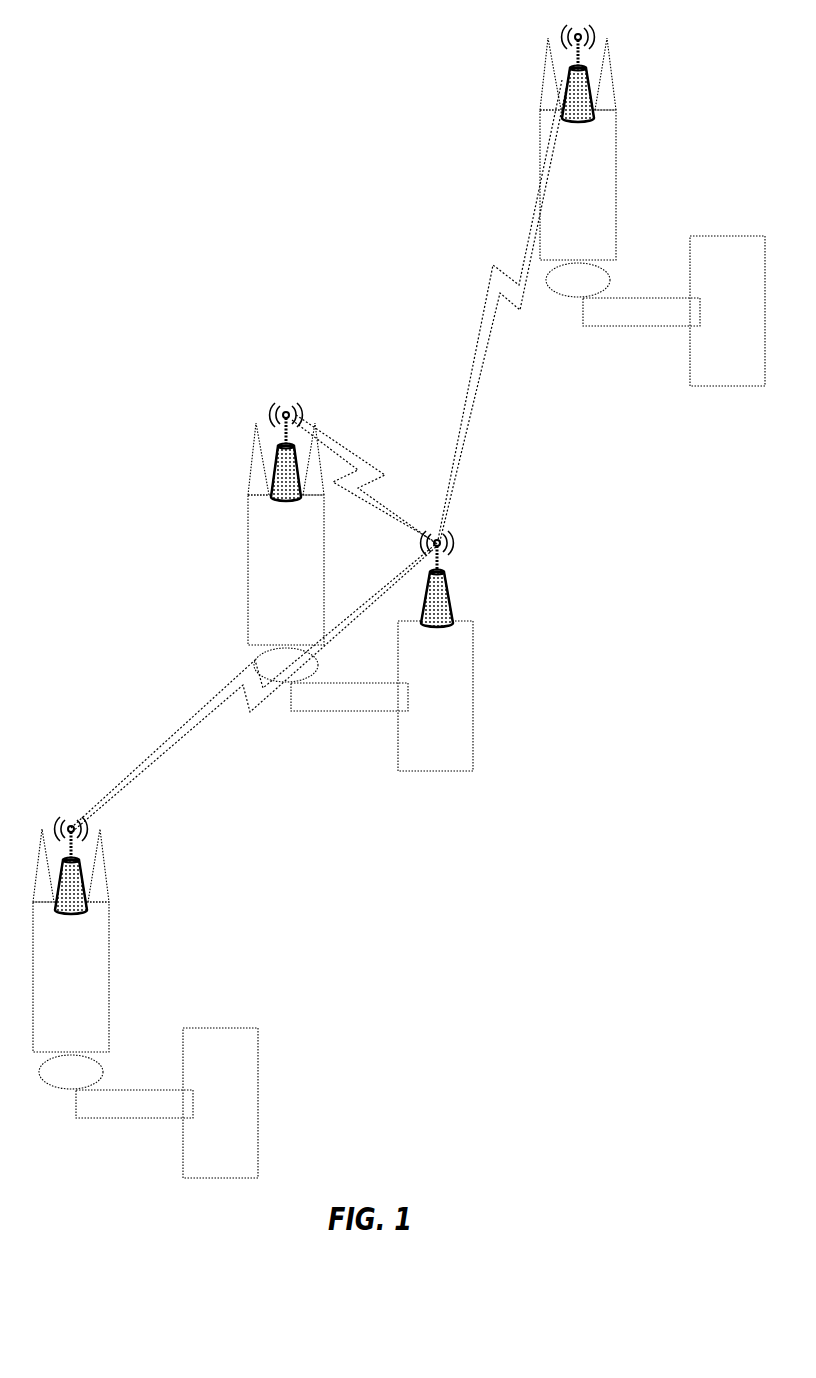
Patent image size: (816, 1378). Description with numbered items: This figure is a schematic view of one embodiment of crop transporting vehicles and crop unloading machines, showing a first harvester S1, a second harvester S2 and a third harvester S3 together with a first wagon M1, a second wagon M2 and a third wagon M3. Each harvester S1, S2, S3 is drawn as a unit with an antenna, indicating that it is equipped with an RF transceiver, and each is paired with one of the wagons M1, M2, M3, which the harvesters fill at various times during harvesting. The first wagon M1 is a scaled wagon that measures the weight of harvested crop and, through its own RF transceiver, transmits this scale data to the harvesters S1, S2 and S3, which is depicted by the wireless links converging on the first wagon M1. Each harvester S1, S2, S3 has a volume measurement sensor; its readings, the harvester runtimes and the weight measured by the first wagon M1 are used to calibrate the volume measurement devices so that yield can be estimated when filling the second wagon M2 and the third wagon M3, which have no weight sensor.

The first harvester S1 is at (286, 542).
The second harvester S2 is at (71, 953).
The third harvester S3 is at (578, 161).
The first wagon M1 is at (382, 651).
The second wagon M2 is at (167, 1103).
The third wagon M3 is at (674, 311).